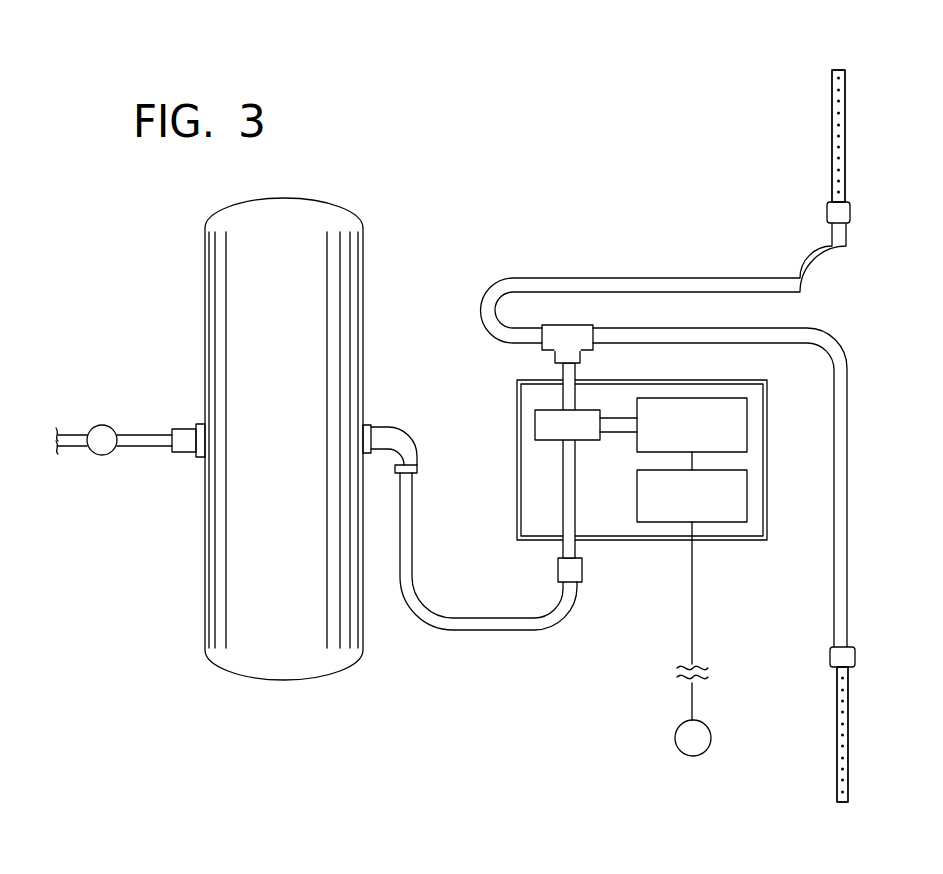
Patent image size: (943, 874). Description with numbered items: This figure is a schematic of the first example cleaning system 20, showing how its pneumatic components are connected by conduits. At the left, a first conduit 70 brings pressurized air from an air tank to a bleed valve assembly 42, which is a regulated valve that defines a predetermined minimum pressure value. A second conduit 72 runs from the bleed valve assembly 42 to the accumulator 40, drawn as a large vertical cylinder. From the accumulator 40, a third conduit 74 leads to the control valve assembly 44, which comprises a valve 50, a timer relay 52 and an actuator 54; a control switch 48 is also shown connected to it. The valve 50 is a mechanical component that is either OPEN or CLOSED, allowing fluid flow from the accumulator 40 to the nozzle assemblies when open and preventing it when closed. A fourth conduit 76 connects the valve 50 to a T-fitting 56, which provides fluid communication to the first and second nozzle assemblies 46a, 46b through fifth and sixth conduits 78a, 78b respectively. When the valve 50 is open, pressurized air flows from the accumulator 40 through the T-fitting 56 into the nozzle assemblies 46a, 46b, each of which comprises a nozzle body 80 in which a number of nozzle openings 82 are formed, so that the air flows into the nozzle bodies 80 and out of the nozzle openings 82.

The cleaning system 20 is at (403, 177).
The accumulator 40 is at (218, 302).
The bleed valve assembly 42 is at (103, 424).
The control valve assembly 44 is at (507, 393).
The first nozzle assembly 46a is at (823, 67).
The second nozzle assembly 46b is at (828, 798).
The control switch 48 is at (674, 738).
The valve 50 is at (535, 434).
The timer relay 52 is at (737, 522).
The actuator 54 is at (703, 398).
The T-fitting 56 is at (575, 332).
The first conduit 70 is at (73, 447).
The second conduit 72 is at (137, 447).
The third conduit 74 is at (503, 628).
The fourth conduit 76 is at (570, 398).
The fifth conduit 78a is at (672, 280).
The sixth conduit 78b is at (763, 333).
The nozzle body 80 is at (832, 118).
The nozzle openings 82 is at (836, 168).